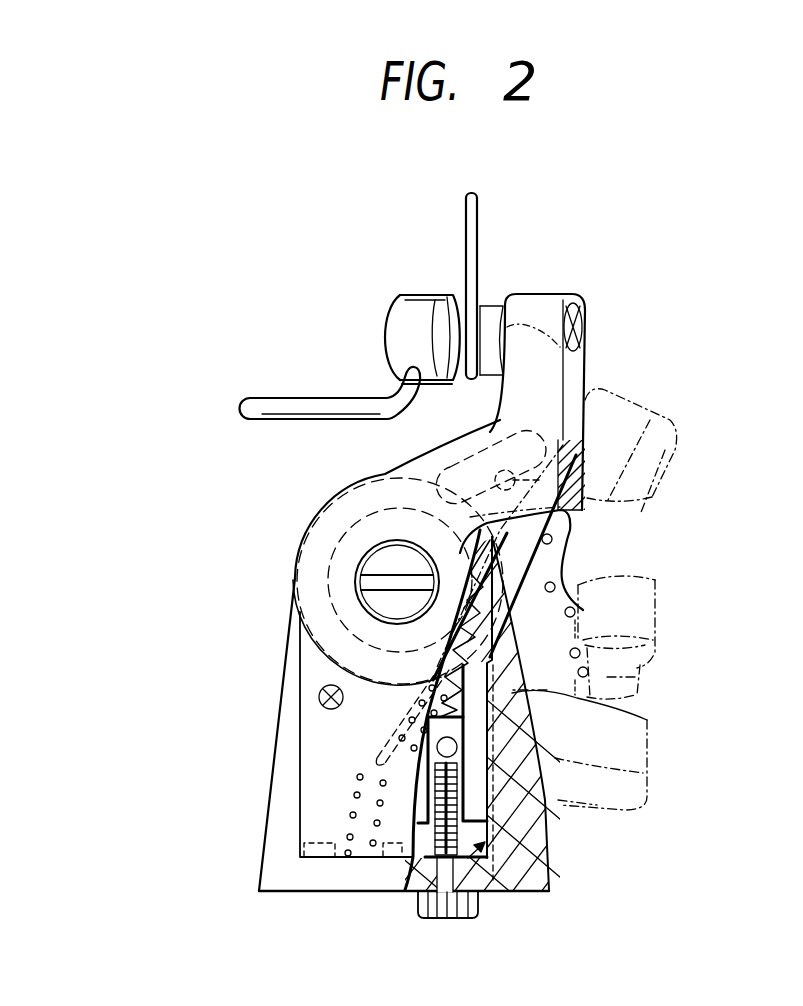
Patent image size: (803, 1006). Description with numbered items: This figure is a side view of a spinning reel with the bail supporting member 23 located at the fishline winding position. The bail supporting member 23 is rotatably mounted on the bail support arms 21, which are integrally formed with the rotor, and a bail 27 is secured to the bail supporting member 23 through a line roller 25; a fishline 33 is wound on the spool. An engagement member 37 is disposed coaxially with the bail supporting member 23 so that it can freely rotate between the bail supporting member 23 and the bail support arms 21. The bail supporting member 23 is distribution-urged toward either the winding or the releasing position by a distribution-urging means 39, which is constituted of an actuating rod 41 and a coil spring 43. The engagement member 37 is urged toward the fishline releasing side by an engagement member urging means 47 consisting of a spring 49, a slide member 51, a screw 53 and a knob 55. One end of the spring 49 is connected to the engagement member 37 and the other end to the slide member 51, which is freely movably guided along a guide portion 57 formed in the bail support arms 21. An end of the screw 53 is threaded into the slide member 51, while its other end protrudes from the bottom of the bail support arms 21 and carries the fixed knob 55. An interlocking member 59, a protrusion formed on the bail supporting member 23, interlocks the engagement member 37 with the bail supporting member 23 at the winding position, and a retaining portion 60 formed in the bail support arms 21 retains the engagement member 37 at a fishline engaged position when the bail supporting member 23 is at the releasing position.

The bail support arms 21 is at (283, 763).
The bail supporting member 23 is at (540, 390).
The line roller 25 is at (485, 317).
The bail 27 is at (278, 410).
The fishline 33 is at (476, 235).
The engagement member 37 is at (313, 570).
The distribution-urging means 39 is at (339, 779).
The actuating rod 41 is at (367, 733).
The coil spring 43 is at (360, 820).
The engagement member urging means 47 is at (520, 893).
The spring 49 is at (432, 683).
The slide member 51 is at (457, 755).
The screw 53 is at (412, 868).
The knob 55 is at (457, 907).
The guide portion 57 is at (547, 862).
The interlocking member 59 is at (688, 492).
The retaining portion 60 is at (500, 590).